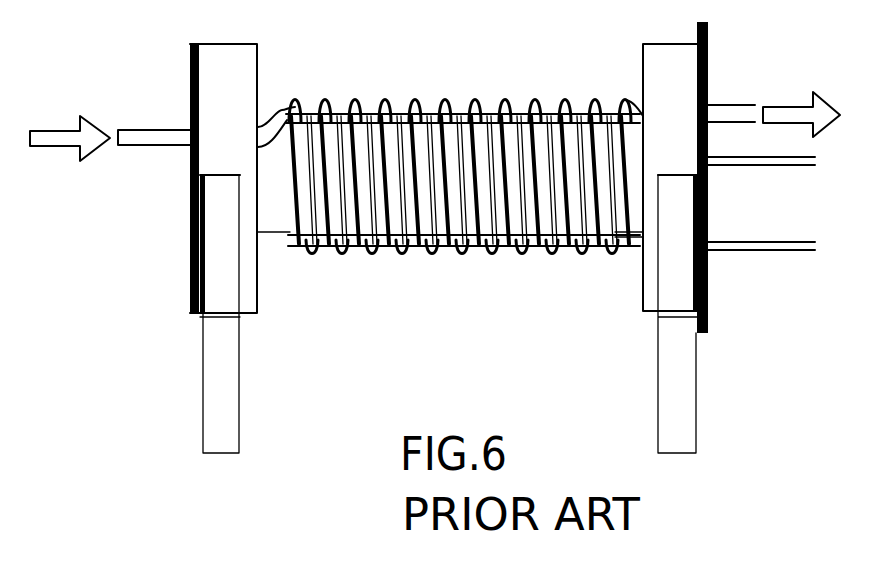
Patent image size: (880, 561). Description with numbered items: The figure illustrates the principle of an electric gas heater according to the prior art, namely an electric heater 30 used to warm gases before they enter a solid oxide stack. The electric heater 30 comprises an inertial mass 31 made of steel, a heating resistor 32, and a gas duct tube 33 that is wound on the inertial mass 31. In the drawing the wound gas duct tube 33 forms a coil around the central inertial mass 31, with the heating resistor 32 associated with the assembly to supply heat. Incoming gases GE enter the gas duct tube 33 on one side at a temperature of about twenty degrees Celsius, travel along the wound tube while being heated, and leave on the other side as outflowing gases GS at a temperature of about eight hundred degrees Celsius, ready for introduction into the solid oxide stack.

The electric heater 30 is at (444, 237).
The inertial mass 31 is at (270, 223).
The heating resistor 32 is at (782, 166).
The gas duct tube 33 is at (153, 135).
The incoming gases GE is at (60, 131).
The outflowing gases GS is at (797, 108).